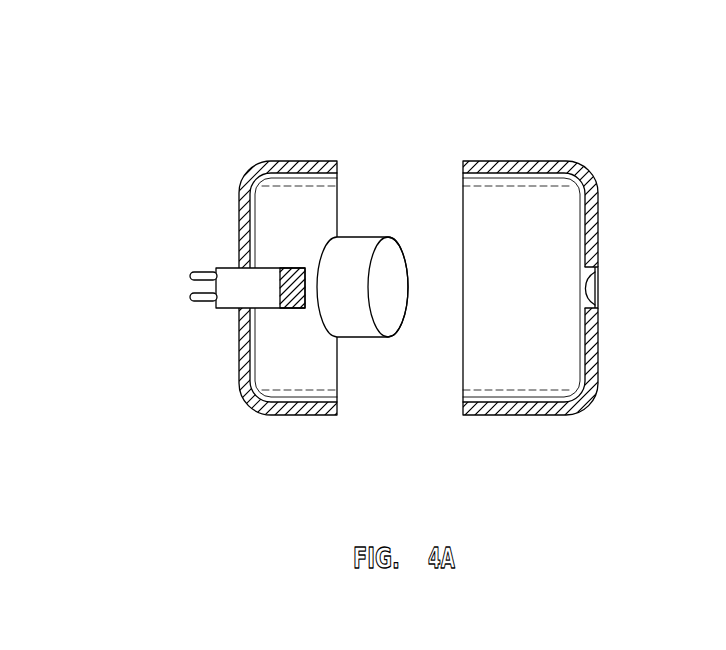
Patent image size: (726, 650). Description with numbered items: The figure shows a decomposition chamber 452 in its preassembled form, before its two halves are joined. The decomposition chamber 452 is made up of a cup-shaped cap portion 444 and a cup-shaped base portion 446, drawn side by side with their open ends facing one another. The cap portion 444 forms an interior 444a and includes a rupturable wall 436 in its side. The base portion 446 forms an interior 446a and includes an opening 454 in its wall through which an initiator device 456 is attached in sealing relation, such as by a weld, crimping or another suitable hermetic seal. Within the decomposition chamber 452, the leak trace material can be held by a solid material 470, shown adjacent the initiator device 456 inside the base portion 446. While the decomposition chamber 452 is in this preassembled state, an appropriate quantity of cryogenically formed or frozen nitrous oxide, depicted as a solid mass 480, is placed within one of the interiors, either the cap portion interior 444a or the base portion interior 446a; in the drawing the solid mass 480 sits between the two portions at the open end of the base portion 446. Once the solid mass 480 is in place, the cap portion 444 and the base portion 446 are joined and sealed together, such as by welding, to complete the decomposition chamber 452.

The decomposition chamber 452 is at (434, 240).
The interior of base portion 446a is at (279, 214).
The rupturable wall 436 is at (611, 243).
The opening 454 is at (242, 262).
The initiator device 456 is at (225, 298).
The solid material 470 is at (290, 308).
The solid mass of frozen N2O 480 is at (397, 288).
The base portion 446 is at (245, 385).
The interior of cap portion 444a is at (491, 345).
The cap portion 444 is at (540, 410).